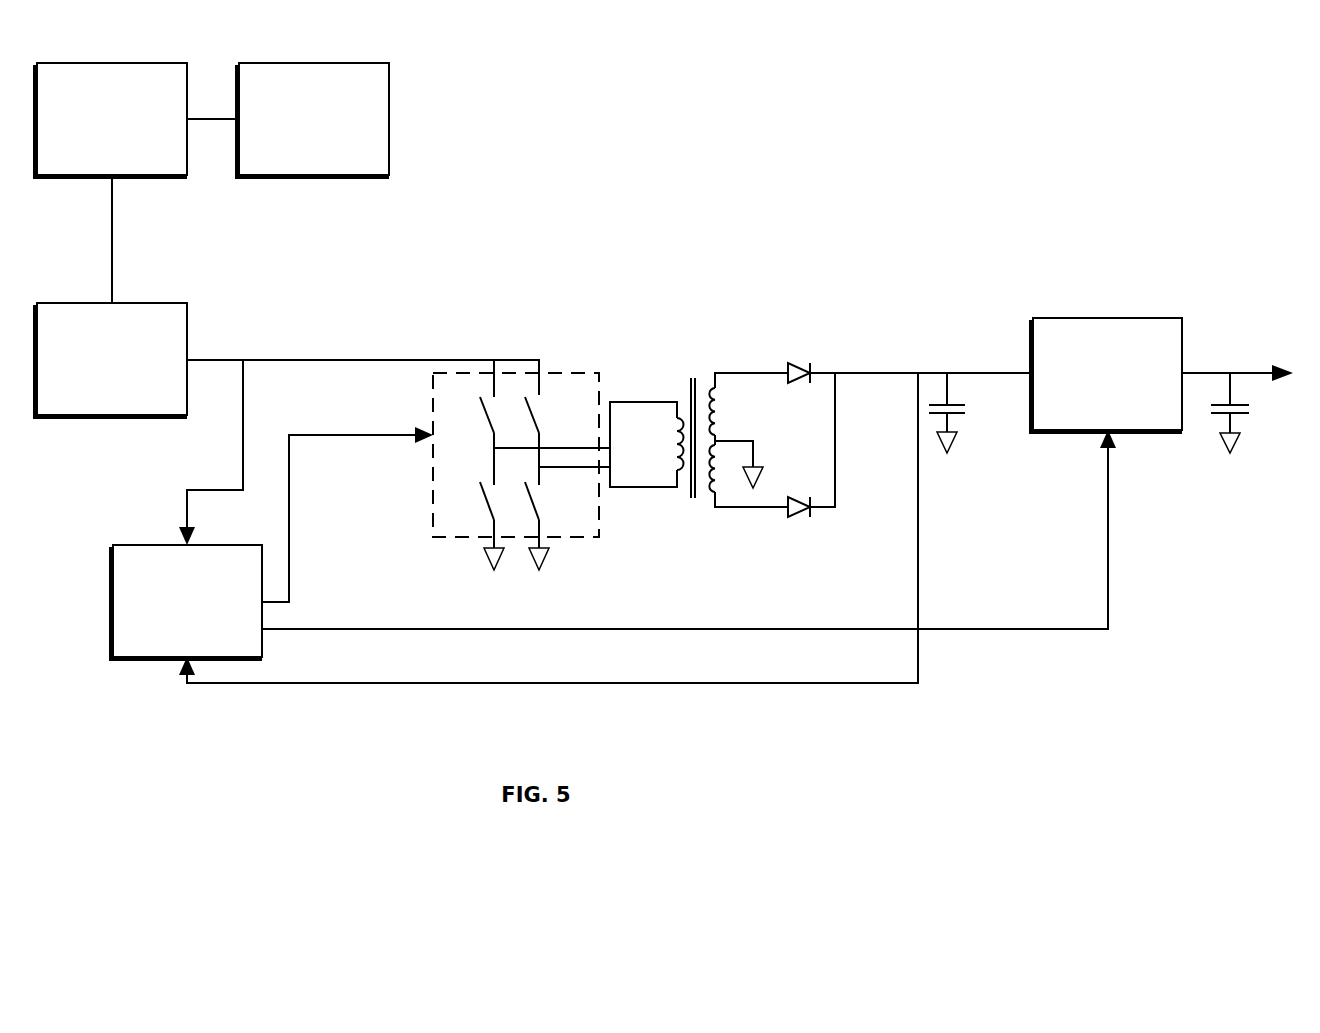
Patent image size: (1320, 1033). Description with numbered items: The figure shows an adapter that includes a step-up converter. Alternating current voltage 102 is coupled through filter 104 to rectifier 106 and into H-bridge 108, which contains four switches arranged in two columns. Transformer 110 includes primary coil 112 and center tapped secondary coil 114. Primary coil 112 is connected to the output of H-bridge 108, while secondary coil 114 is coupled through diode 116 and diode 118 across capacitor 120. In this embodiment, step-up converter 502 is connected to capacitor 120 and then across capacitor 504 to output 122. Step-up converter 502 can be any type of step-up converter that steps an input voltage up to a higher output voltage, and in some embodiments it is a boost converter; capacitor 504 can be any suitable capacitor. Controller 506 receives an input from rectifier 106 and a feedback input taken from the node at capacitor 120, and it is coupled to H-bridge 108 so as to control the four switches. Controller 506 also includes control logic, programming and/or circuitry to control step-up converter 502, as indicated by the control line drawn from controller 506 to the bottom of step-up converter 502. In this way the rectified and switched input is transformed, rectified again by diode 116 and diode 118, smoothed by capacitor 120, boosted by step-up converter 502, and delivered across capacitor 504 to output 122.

The alternating current voltage 102 is at (313, 120).
The filter 104 is at (111, 120).
The rectifier 106 is at (111, 360).
The H-bridge 108 is at (422, 495).
The transformer 110 is at (670, 424).
The primary coil 112 is at (665, 420).
The secondary coil 114 is at (752, 380).
The diode 116 is at (798, 523).
The diode 118 is at (797, 357).
The capacitor 120 is at (935, 393).
The output 122 is at (1250, 350).
The step-up converter 502 is at (1106, 375).
The capacitor 504 is at (1205, 428).
The controller 506 is at (186, 602).